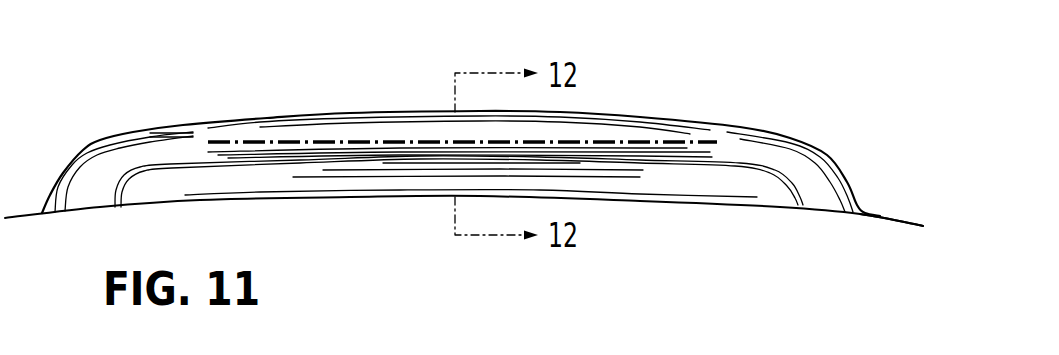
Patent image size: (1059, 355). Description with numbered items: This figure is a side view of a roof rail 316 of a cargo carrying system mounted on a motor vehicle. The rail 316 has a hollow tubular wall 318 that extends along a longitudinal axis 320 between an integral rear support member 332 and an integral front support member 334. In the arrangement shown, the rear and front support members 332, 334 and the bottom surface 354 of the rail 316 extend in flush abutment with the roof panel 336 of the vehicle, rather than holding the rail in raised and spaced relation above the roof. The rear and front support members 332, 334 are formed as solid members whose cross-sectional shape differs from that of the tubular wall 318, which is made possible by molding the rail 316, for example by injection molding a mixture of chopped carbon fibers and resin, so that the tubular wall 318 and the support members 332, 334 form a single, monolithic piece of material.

The rail 316 is at (223, 118).
The tubular wall 318 is at (662, 133).
The longitudinal axis 320 is at (365, 142).
The rear support member 332 is at (99, 163).
The front support member 334 is at (823, 167).
The roof panel 336 is at (910, 223).
The bottom surface 354 is at (680, 202).